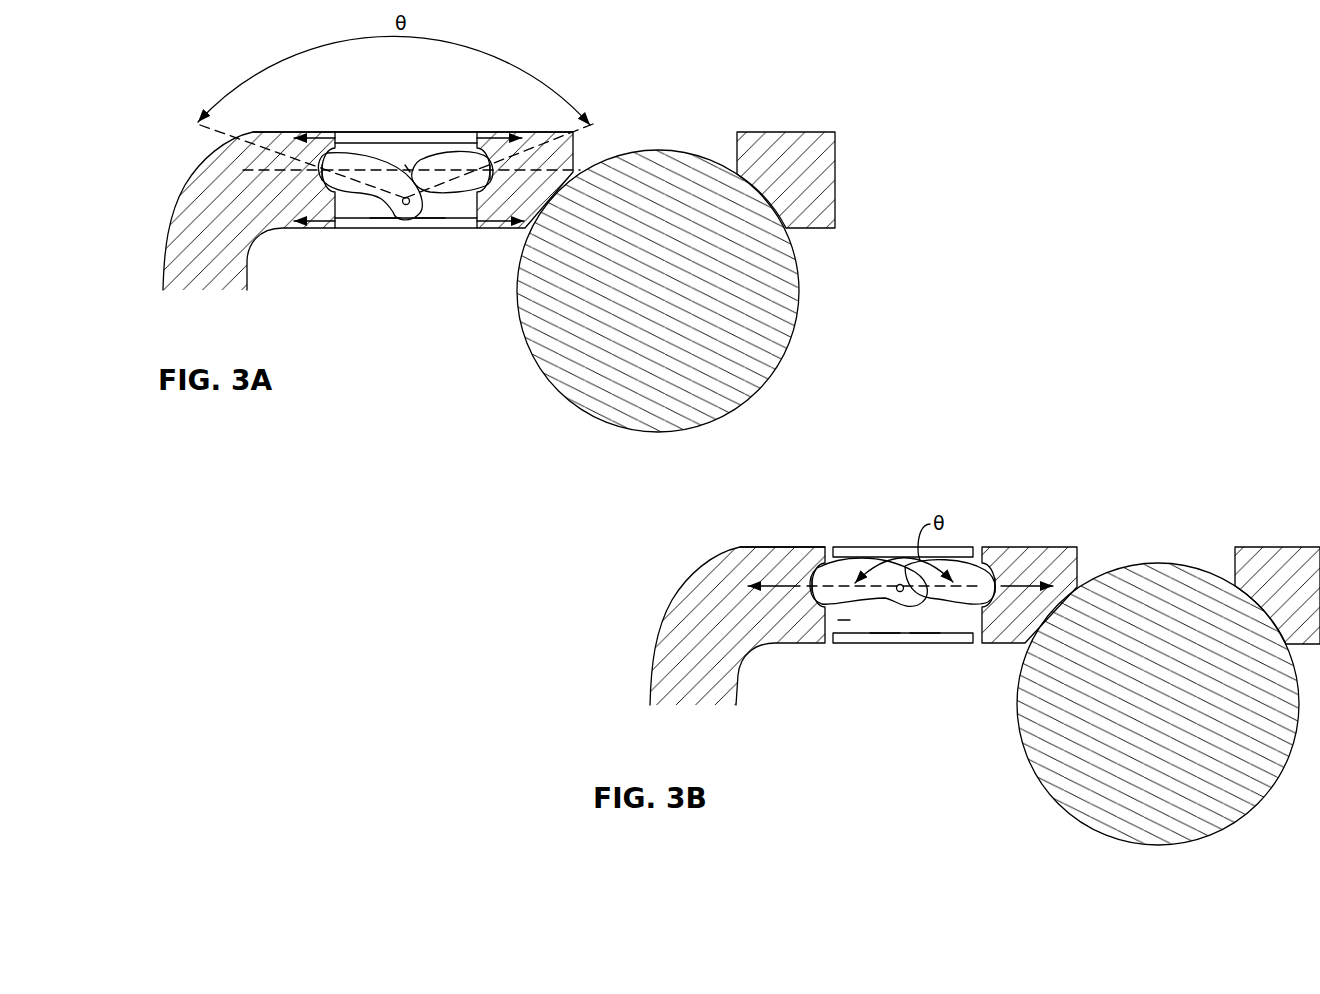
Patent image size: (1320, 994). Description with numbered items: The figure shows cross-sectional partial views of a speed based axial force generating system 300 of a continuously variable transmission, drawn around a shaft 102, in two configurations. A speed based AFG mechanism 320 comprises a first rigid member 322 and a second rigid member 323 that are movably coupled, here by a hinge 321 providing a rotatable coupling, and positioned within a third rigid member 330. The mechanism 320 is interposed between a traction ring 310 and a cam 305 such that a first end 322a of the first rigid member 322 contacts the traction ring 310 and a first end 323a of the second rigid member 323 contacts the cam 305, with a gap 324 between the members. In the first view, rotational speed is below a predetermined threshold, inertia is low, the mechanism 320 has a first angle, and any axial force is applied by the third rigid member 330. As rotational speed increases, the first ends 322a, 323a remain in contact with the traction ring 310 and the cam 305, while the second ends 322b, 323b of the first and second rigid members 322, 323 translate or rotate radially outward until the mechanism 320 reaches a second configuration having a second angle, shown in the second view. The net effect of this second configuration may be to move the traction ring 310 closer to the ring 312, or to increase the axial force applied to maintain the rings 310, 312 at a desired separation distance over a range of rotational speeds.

In FIG. 3A, the locking mechanism 300 is at (147, 130).
In FIG. 3B, the locking mechanism 300 is at (1079, 428).
In FIG. 3A, the cam 305 is at (292, 132).
In FIG. 3B, the cam 305 is at (797, 547).
In FIG. 3A, the traction ring 310 is at (523, 132).
In FIG. 3B, the traction ring 310 is at (1033, 547).
In FIG. 3A, the ring 312 is at (778, 132).
In FIG. 3B, the ring 312 is at (1270, 547).
In FIG. 3A, the shaft 102 is at (793, 243).
In FIG. 3B, the shaft 102 is at (1280, 778).
In FIG. 3A, the speed based AFG mechanism 320 is at (505, 295).
In FIG. 3B, the speed based AFG mechanism 320 is at (1003, 693).
In FIG. 3A, the hinge 321 is at (405, 205).
In FIG. 3B, the hinge 321 is at (900, 594).
In FIG. 3A, the first rigid member 322 is at (450, 196).
In FIG. 3B, the first rigid member 322 is at (977, 556).
In FIG. 3A, the first end of first rigid member 322a is at (492, 182).
In FIG. 3B, the first end of first rigid member 322a is at (1000, 601).
In FIG. 3A, the second end of first rigid member 322b is at (428, 237).
In FIG. 3B, the second end of first rigid member 322b is at (922, 606).
In FIG. 3A, the second rigid member 323 is at (376, 197).
In FIG. 3B, the second rigid member 323 is at (830, 565).
In FIG. 3A, the first end of second rigid member 323a is at (319, 181).
In FIG. 3B, the first end of second rigid member 323a is at (802, 592).
In FIG. 3A, the second end of second rigid member 323b is at (383, 237).
In FIG. 3B, the second end of second rigid member 323b is at (883, 612).
In FIG. 3A, the gap 324 is at (407, 157).
In FIG. 3B, the gap 324 is at (842, 617).
In FIG. 3A, the third rigid member 330 is at (368, 132).
In FIG. 3B, the third rigid member 330 is at (878, 547).